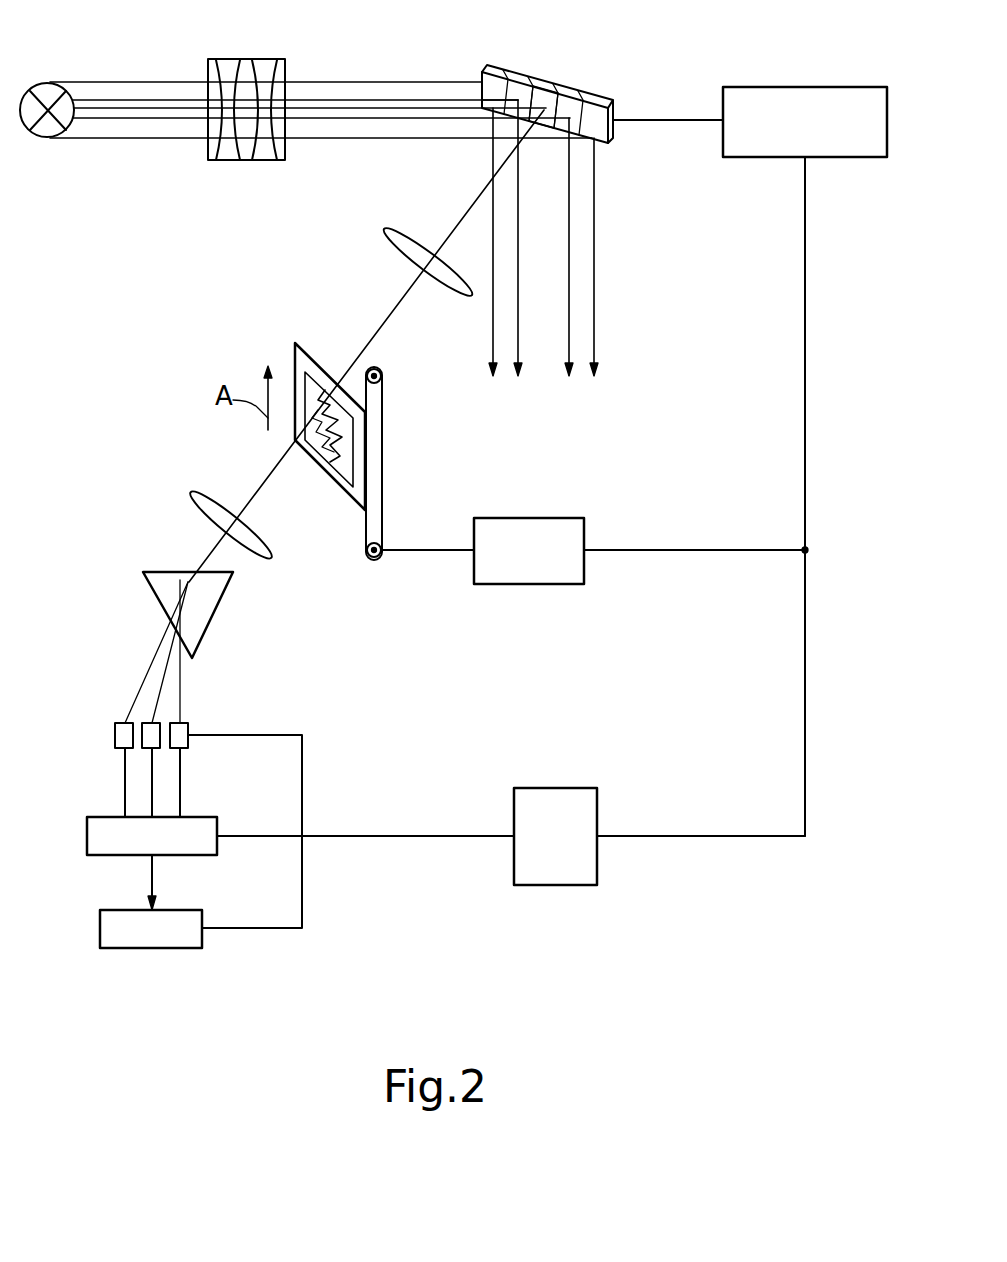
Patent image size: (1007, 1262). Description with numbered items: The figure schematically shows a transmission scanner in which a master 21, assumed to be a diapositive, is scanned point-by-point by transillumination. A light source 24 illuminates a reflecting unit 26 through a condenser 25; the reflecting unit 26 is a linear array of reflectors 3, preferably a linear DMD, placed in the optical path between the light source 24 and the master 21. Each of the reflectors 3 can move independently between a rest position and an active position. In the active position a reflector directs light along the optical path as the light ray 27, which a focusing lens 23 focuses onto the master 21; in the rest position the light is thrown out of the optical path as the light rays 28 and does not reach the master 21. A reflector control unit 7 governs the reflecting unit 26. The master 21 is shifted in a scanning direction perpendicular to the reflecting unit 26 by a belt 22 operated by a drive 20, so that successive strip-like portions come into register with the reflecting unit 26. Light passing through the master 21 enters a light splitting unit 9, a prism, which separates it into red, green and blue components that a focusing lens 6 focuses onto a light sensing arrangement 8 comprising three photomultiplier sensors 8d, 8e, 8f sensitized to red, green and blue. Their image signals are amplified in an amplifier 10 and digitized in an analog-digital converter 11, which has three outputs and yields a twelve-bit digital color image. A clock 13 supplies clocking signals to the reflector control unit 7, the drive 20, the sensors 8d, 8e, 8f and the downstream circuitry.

The light source 24 is at (37, 83).
The condenser 25 is at (243, 60).
The reflectors 3 is at (575, 91).
The reflecting unit 26 is at (556, 81).
The light rays 28 is at (597, 207).
The reflector control unit 7 is at (773, 87).
The light ray 27 is at (397, 305).
The focusing lens 23 is at (422, 240).
The focusing lens 6 is at (222, 500).
The master 21 is at (345, 475).
The belt 22 is at (386, 466).
The drive 20 is at (508, 518).
The light splitting unit 9 is at (143, 595).
The light sensing arrangement 8 is at (145, 694).
The sensor 8d is at (118, 723).
The sensor 8e is at (148, 723).
The sensor 8f is at (190, 723).
The amplifier 10 is at (87, 841).
The analog-digital converter 11 is at (100, 932).
The clock 13 is at (540, 788).